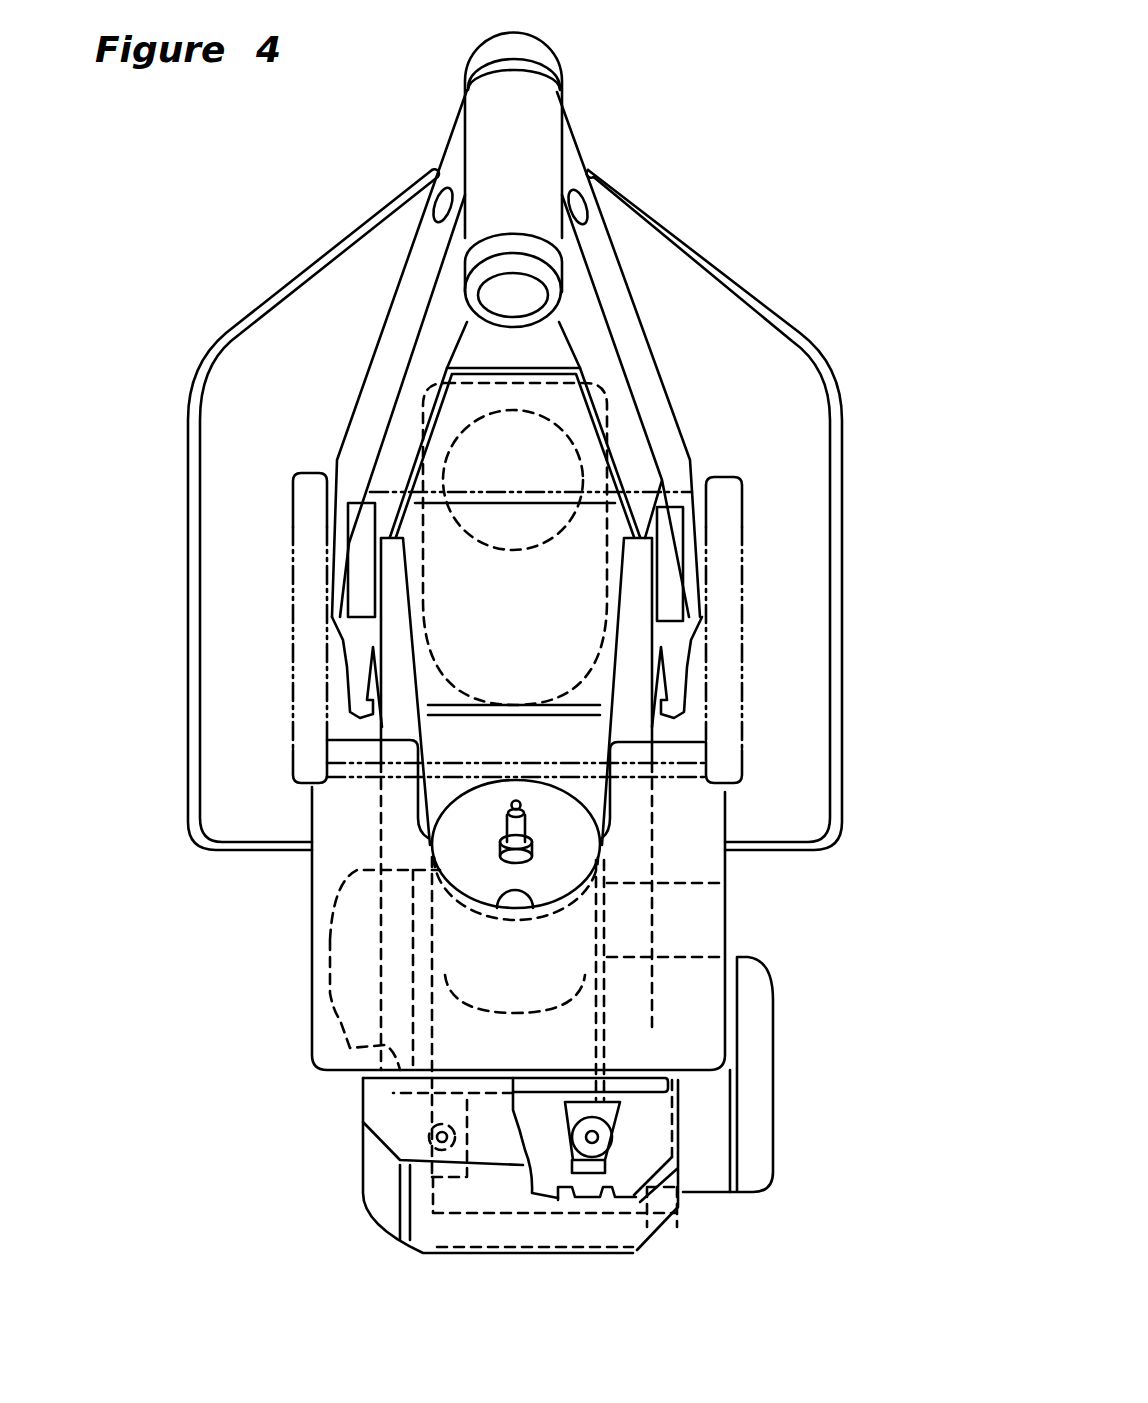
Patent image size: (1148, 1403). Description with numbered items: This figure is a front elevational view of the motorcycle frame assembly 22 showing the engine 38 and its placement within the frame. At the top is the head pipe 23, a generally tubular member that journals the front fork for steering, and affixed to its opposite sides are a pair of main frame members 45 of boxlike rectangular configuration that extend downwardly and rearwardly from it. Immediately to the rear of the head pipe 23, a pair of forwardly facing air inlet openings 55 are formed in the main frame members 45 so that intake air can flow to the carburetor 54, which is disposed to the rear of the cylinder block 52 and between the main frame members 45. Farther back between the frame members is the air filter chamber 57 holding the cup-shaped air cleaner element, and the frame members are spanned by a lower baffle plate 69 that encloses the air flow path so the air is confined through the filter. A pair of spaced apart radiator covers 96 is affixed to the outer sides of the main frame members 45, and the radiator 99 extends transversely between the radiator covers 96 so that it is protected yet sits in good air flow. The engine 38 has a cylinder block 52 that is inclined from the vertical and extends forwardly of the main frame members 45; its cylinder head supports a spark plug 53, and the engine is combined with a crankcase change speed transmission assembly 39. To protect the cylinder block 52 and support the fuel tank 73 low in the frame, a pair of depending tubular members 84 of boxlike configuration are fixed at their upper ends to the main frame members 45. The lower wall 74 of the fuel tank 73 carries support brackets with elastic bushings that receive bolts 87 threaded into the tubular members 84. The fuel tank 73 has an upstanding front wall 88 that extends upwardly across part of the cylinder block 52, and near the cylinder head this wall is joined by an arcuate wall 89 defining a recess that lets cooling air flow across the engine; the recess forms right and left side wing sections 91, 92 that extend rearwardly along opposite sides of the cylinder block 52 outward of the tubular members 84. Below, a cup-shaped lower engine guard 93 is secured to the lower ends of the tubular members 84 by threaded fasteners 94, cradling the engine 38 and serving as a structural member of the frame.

The frame assembly 22 is at (488, 374).
The head pipe 23 is at (530, 102).
The air inlet openings 55 is at (433, 203).
The main frame members 45 is at (420, 260).
The carburetor 54 is at (583, 398).
The air filter chamber 57 is at (627, 487).
The lower baffle plate 69 is at (503, 629).
The radiator 99 is at (738, 527).
The radiator covers 96 is at (186, 540).
The depending tubular members 84 is at (392, 682).
The spark plug 53 is at (528, 826).
The right side wing section 91 is at (703, 832).
The left side wing section 92 is at (347, 810).
The cylinder block 52 is at (617, 882).
The engine 38 is at (330, 940).
The arcuate wall 89 is at (515, 909).
The front wall 88 is at (440, 1025).
The lower engine guard 93 is at (362, 1154).
The fuel tank 73 is at (749, 1022).
The crankcase change speed transmission assembly 39 is at (707, 1102).
The lower wall 74 is at (683, 1197).
The bolts 87 is at (430, 1145).
The threaded fasteners 94 is at (585, 1200).